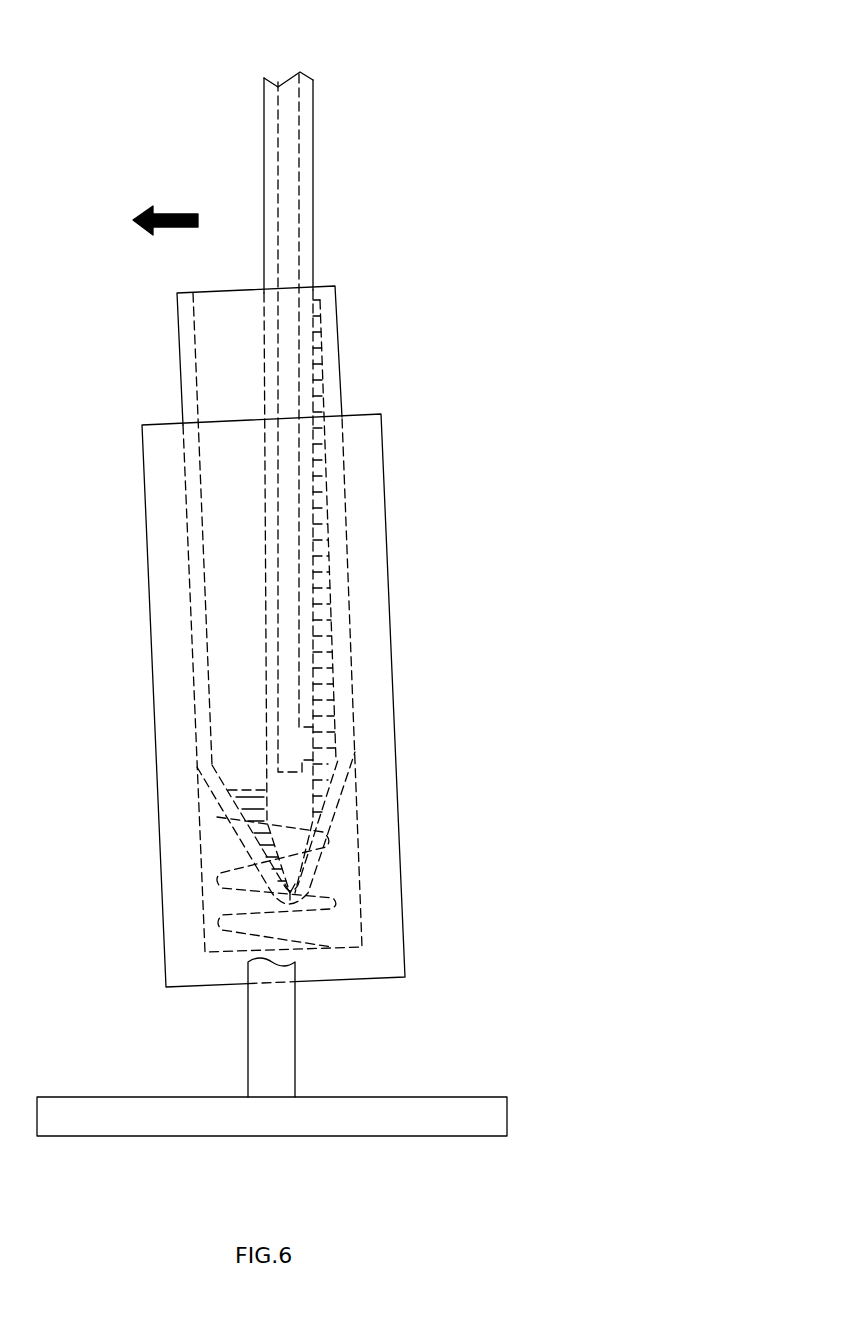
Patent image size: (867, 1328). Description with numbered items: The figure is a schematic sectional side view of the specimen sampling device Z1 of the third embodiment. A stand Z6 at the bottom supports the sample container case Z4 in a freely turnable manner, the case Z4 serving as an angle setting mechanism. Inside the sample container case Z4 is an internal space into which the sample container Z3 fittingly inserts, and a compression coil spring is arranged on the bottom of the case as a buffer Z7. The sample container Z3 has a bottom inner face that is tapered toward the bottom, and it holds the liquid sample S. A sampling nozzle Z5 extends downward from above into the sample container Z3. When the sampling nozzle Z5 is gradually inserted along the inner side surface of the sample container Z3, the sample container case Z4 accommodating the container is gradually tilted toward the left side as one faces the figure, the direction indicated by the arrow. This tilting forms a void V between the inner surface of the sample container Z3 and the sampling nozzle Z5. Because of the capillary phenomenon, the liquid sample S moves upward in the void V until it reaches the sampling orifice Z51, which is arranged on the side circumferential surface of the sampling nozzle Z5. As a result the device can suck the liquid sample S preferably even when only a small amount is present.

The specimen sampling device Z1 is at (522, 105).
The sample container Z3 is at (337, 353).
The sample container case Z4 is at (395, 783).
The sampling nozzle Z5 is at (313, 220).
The sampling orifice Z51 is at (313, 742).
The stand Z6 is at (297, 1050).
The buffer Z7 is at (232, 888).
The void V is at (320, 590).
The liquid sample S is at (247, 790).